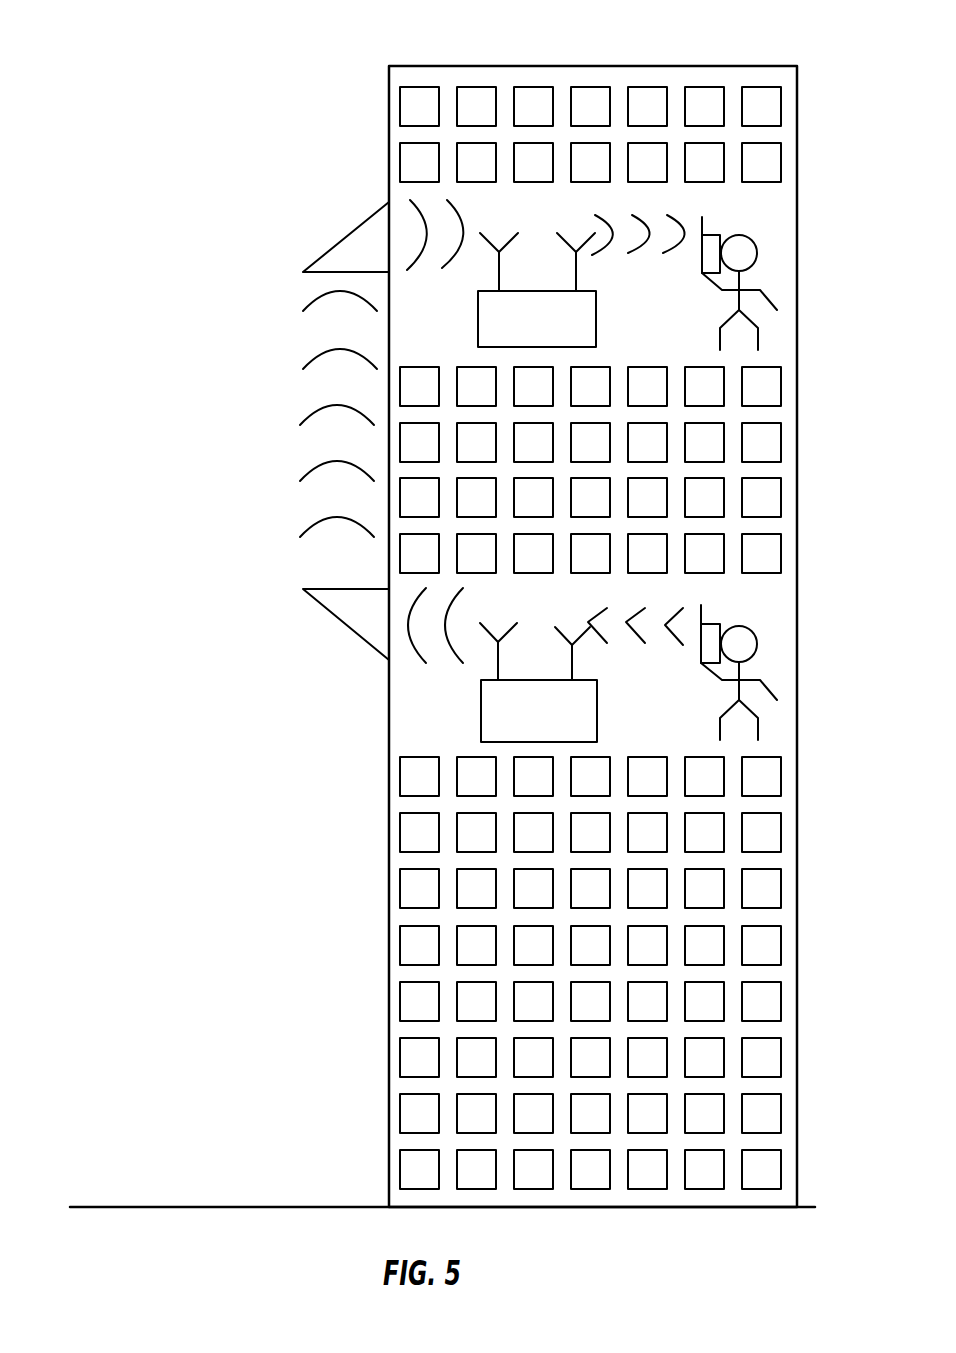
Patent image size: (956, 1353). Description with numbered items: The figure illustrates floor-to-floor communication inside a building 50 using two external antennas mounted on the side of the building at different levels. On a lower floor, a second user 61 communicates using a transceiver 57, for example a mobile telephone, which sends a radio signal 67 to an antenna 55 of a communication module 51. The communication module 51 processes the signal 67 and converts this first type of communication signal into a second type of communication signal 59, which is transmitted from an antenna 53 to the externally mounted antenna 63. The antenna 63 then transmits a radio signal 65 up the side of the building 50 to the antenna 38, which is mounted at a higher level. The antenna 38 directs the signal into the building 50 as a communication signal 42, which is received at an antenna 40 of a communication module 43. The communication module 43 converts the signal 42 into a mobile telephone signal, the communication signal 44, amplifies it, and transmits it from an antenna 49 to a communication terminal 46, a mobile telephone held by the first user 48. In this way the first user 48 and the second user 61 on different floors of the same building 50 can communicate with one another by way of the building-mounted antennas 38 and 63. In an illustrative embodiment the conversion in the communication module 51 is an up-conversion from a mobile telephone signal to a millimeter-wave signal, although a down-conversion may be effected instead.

The building 50 is at (389, 128).
The antenna 38 is at (370, 238).
The communication signal 42 is at (452, 212).
The antenna 40 is at (503, 276).
The communication module 43 is at (500, 330).
The antenna 49 is at (578, 272).
The communication signal 44 is at (650, 212).
The communication terminal 46 is at (700, 254).
The user 48 is at (725, 306).
The radio signal 65 is at (317, 496).
The antenna 63 is at (368, 625).
The signal 59 is at (440, 612).
The antenna 53 is at (501, 665).
The communication module 51 is at (500, 719).
The antenna 55 is at (575, 658).
The radio signal 67 is at (667, 610).
The transceiver 57 is at (700, 650).
The second user 61 is at (725, 695).